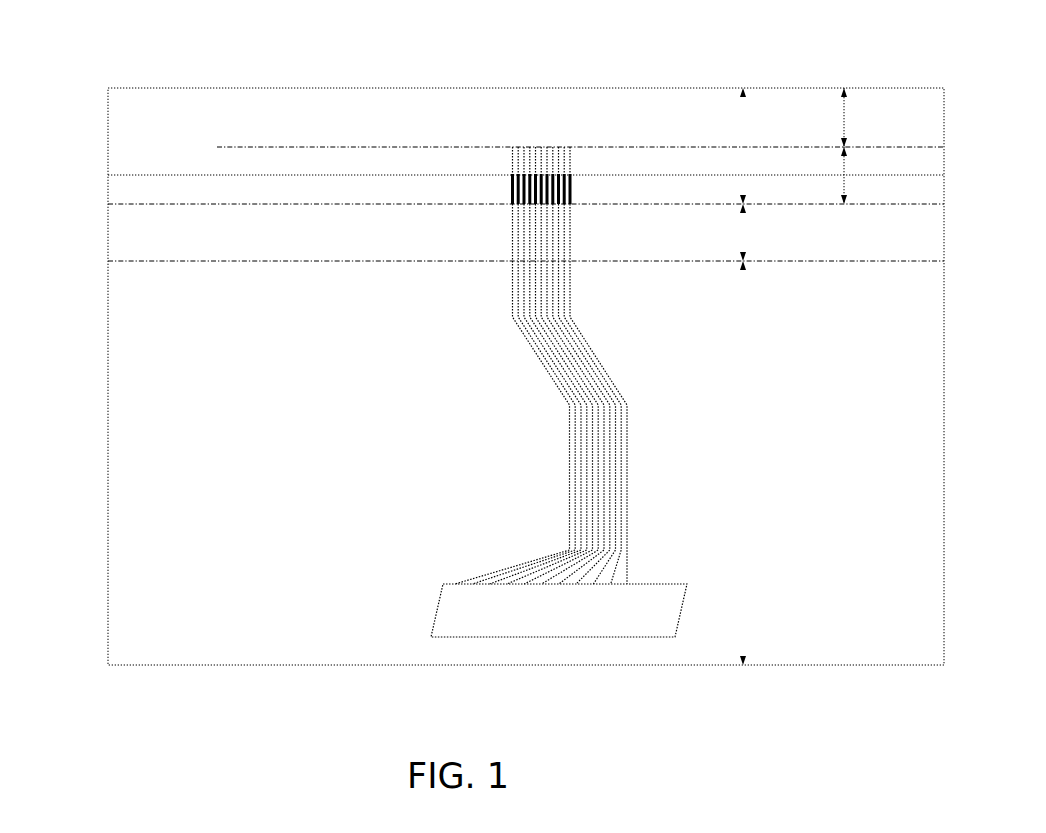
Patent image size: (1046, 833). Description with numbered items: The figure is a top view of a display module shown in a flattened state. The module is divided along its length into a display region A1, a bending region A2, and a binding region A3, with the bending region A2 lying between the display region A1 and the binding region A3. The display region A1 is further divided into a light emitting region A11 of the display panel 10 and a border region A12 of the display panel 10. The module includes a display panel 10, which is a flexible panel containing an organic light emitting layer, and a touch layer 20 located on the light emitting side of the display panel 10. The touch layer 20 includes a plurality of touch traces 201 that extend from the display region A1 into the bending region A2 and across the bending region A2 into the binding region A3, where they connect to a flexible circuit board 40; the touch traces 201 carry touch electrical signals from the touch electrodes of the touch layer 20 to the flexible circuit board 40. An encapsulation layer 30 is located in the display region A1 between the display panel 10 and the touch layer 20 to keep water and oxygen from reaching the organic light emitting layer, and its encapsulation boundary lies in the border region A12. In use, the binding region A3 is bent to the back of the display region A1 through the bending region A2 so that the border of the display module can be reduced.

The display panel 10 is at (618, 88).
The touch layer 20 is at (507, 160).
The touch traces 201 is at (491, 104).
The encapsulation layer 30 is at (217, 147).
The flexible circuit board 40 is at (540, 637).
The display region A1 is at (763, 146).
The light emitting region A11 is at (869, 117).
The border region A12 is at (869, 175).
The bending region A2 is at (763, 232).
The binding region A3 is at (763, 463).